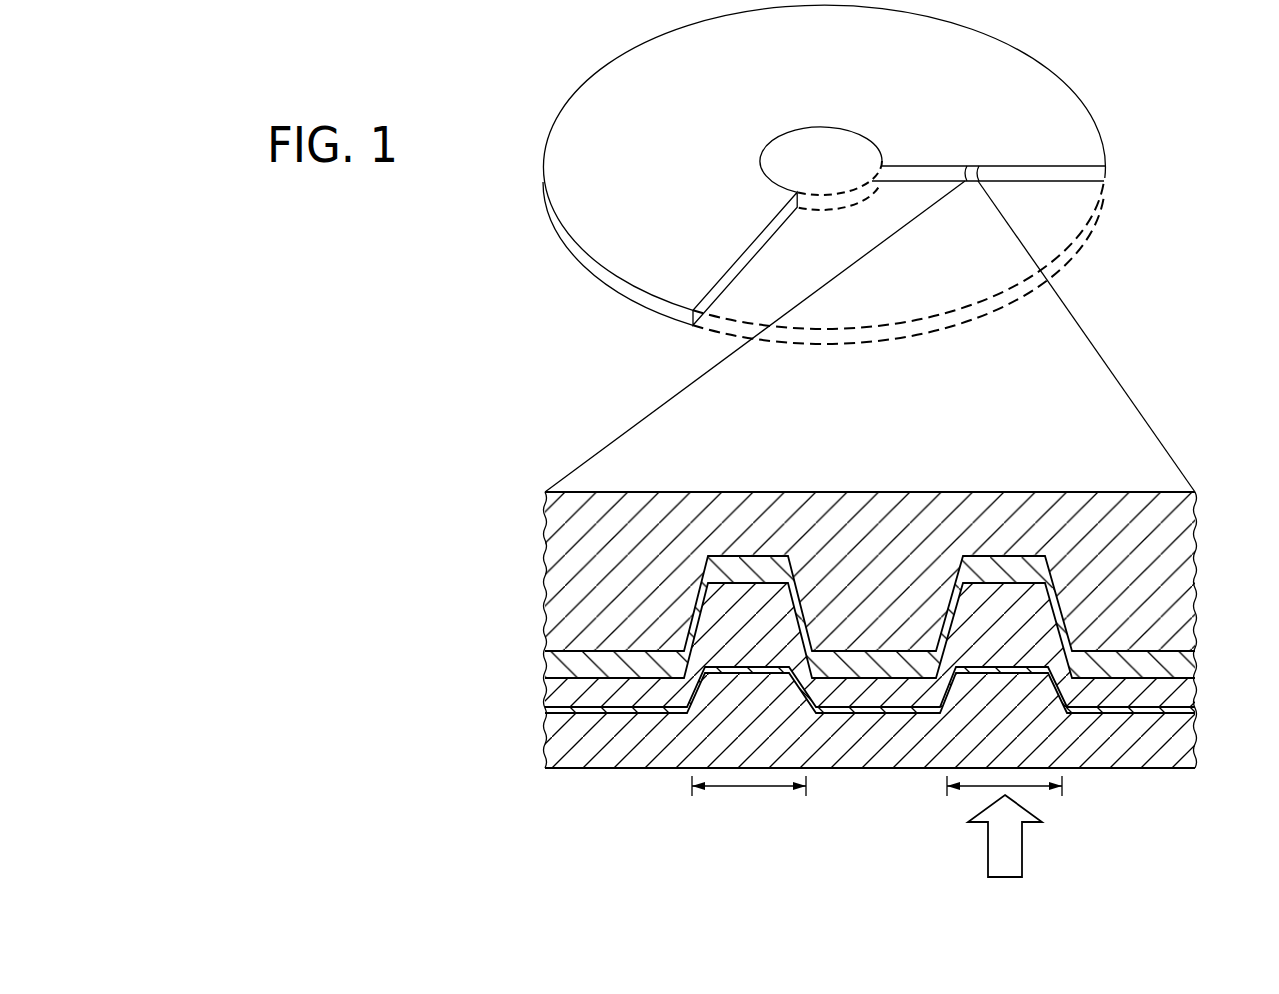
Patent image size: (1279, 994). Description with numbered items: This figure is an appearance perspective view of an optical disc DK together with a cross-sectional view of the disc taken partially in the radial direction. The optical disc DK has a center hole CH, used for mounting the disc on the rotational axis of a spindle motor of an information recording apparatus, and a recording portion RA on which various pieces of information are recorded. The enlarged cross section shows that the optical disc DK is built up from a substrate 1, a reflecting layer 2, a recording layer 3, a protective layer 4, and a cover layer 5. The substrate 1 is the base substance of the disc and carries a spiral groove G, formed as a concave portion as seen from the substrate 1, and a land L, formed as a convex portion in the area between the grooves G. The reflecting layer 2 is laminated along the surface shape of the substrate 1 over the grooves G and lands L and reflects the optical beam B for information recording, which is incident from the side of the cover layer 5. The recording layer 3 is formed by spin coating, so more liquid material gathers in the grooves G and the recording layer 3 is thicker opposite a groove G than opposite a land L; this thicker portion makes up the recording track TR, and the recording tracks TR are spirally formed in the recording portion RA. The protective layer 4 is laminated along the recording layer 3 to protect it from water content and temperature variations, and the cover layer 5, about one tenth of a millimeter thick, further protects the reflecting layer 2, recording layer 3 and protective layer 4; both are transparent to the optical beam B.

The optical disc DK is at (1011, 46).
The recording portion RA is at (941, 111).
The center hole CH is at (836, 177).
The land L is at (644, 652).
The groove G is at (735, 557).
The substrate 1 is at (545, 566).
The reflecting layer 2 is at (545, 657).
The recording layer 3 is at (545, 686).
The protective layer 4 is at (545, 710).
The cover layer 5 is at (545, 747).
The recording track TR is at (972, 788).
The optical beam B is at (1022, 848).